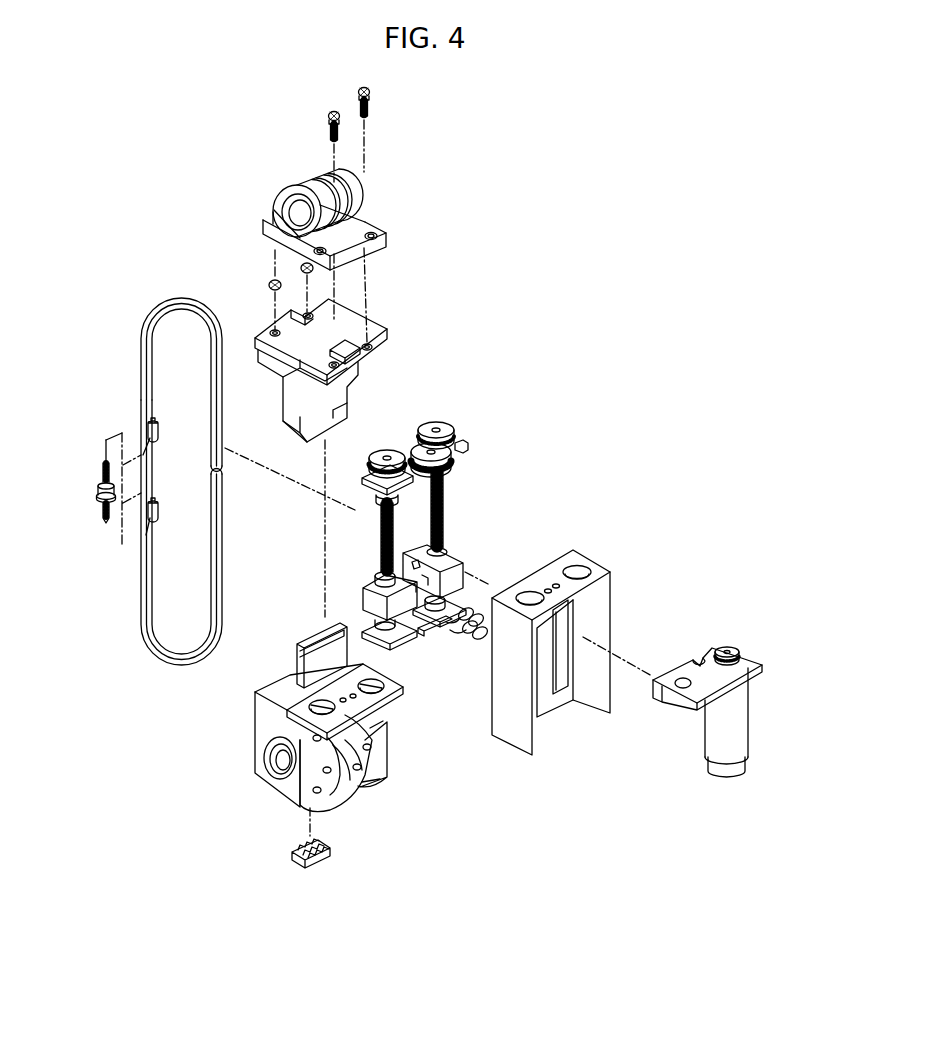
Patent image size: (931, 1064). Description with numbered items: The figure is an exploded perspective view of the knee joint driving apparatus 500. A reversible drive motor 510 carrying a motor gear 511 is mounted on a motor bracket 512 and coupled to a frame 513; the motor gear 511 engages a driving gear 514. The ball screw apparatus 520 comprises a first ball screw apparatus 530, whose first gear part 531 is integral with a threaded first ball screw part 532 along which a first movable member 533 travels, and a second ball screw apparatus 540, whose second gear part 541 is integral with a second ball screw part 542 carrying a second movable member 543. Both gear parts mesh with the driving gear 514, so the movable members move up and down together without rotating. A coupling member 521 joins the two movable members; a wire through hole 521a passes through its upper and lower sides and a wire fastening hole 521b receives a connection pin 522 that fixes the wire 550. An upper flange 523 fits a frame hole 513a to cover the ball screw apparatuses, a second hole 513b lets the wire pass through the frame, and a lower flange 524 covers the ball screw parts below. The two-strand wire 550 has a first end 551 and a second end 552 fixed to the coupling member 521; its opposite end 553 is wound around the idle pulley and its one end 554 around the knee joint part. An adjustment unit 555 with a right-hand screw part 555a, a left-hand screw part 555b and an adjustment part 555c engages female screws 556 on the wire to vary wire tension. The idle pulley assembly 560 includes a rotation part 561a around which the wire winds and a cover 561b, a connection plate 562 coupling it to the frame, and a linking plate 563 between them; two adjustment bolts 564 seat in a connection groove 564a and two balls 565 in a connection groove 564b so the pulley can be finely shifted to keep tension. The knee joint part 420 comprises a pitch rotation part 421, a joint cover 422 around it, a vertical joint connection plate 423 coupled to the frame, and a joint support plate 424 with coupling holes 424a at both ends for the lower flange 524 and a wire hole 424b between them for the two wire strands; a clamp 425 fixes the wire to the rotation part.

The joint driving apparatus 500 is at (616, 398).
The drive motor 510 is at (748, 716).
The motor gear 511 is at (730, 646).
The motor bracket 512 is at (683, 698).
The frame 513 is at (575, 556).
The frame hole 513a is at (586, 569).
The hole 513b is at (551, 584).
The driving gear 514 is at (454, 464).
The ball screw apparatus 520 is at (466, 406).
The coupling member 521 is at (384, 645).
The wire through hole 521a is at (398, 565).
The wire fastening hole 521b is at (458, 562).
The connection pin 522 is at (472, 640).
The upper flange 523 is at (372, 490).
The lower flange 524 is at (424, 636).
The first ball screw apparatus 530 is at (378, 532).
The first gear part 531 is at (386, 450).
The first ball screw part 532 is at (378, 578).
The first movable member 533 is at (366, 604).
The second ball screw apparatus 540 is at (445, 525).
The second gear part 541 is at (437, 426).
The second ball screw part 542 is at (446, 500).
The second movable member 543 is at (470, 577).
The wire 550 is at (153, 652).
The first end 551 is at (220, 455).
The second end 552 is at (222, 476).
The opposite end 553 is at (183, 301).
The one end 554 is at (190, 668).
The adjustment unit 555 is at (99, 530).
The right-hand screw part 555a is at (104, 460).
The left-hand screw part 555b is at (100, 518).
The adjustment part 555c is at (99, 492).
The female screw 556 is at (150, 426).
The idle pulley assembly 560 is at (414, 194).
The rotation part 561a is at (340, 212).
The cover 561b is at (374, 240).
The connection plate 562 is at (350, 392).
The linking plate 563 is at (386, 338).
The adjustment bolts 564 is at (372, 96).
The connection groove 564a is at (284, 252).
The connection groove 564b is at (272, 326).
The balls 565 is at (298, 268).
The knee joint part 420 is at (364, 800).
The pitch rotation part 421 is at (376, 766).
The joint cover 422 is at (258, 740).
The joint connection plate 423 is at (282, 690).
The joint support plate 424 is at (282, 758).
The coupling hole 424a is at (386, 688).
The wire hole 424b is at (386, 730).
The clamp 425 is at (325, 868).